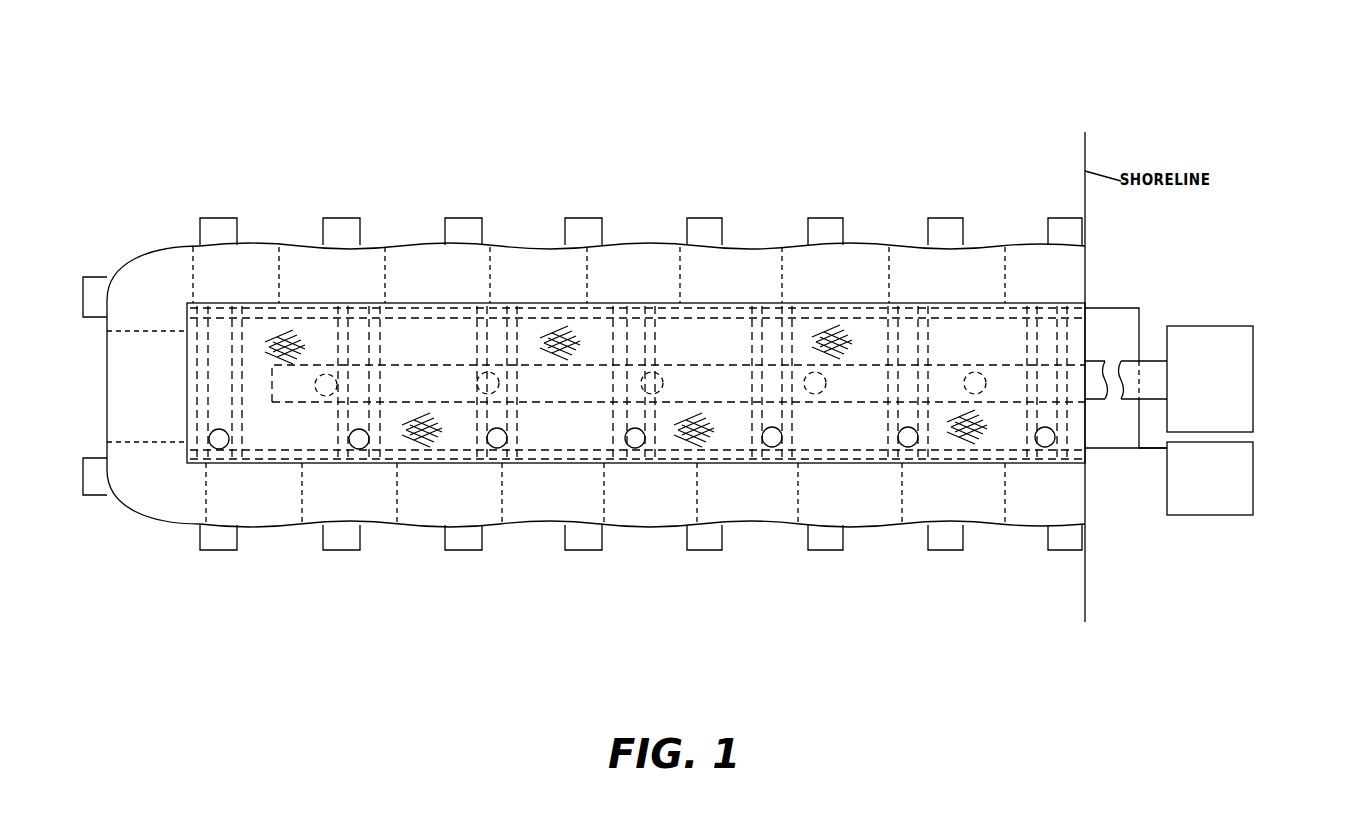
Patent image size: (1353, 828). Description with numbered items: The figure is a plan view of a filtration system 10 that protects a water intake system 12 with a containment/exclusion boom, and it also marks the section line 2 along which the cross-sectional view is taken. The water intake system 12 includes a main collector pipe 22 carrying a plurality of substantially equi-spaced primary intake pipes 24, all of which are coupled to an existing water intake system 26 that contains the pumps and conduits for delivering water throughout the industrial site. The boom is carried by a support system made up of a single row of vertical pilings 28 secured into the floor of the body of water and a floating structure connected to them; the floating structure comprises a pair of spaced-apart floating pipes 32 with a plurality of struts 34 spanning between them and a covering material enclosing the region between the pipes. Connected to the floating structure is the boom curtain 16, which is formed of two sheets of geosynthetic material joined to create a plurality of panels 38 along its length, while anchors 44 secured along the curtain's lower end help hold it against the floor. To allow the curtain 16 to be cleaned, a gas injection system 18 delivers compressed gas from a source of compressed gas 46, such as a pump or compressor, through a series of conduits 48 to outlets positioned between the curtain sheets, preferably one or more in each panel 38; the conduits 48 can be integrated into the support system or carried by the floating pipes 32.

The filtration system 10 is at (160, 88).
The water intake system 12 is at (1201, 300).
The boom curtain 16 is at (868, 205).
The gas injection system 18 is at (1204, 538).
The main collector pipe 22 is at (285, 402).
The primary intake pipes 24 is at (822, 388).
The existing water intake system 26 is at (1247, 422).
The vertical pilings 28 is at (507, 435).
The floating pipes 32 is at (404, 305).
The struts 34 is at (242, 352).
The panels 38 is at (120, 362).
The anchors 44 is at (696, 227).
The source of compressed gas 46 is at (1250, 505).
The conduits 48 is at (1121, 308).
The section line of FIG. 2 is at (583, 208).